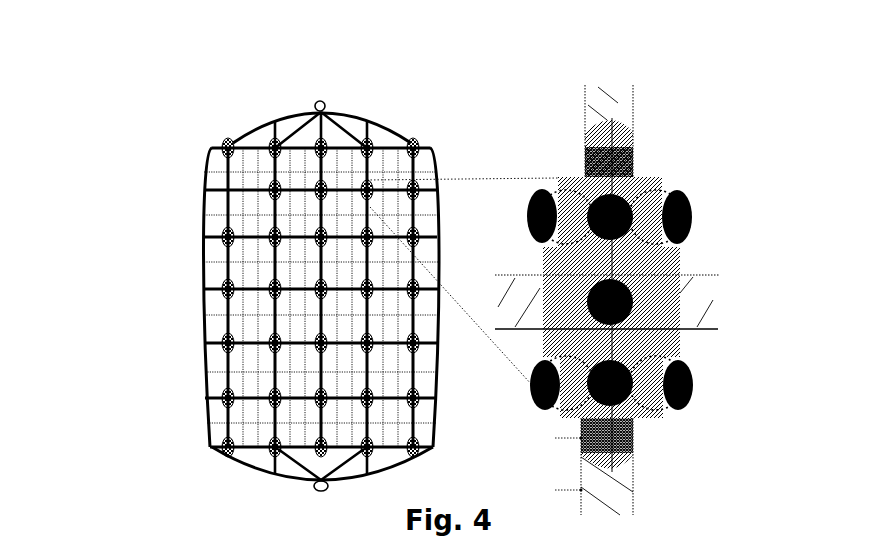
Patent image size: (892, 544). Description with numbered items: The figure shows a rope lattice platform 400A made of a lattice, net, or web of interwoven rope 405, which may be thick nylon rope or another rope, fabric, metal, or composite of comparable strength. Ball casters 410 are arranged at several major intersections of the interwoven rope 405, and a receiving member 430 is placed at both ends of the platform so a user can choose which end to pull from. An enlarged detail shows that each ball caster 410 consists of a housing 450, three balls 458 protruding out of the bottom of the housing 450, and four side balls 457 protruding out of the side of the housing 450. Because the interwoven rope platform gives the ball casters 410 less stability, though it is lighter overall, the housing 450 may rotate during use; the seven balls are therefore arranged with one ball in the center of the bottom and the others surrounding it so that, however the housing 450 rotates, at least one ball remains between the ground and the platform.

The rope platform 400A is at (232, 134).
The interwoven rope 405 is at (255, 315).
The ball caster 410 is at (273, 236).
The receiving member 430 is at (313, 104).
The housing 450 is at (665, 265).
The side balls 457 is at (684, 402).
The balls 458 is at (588, 197).